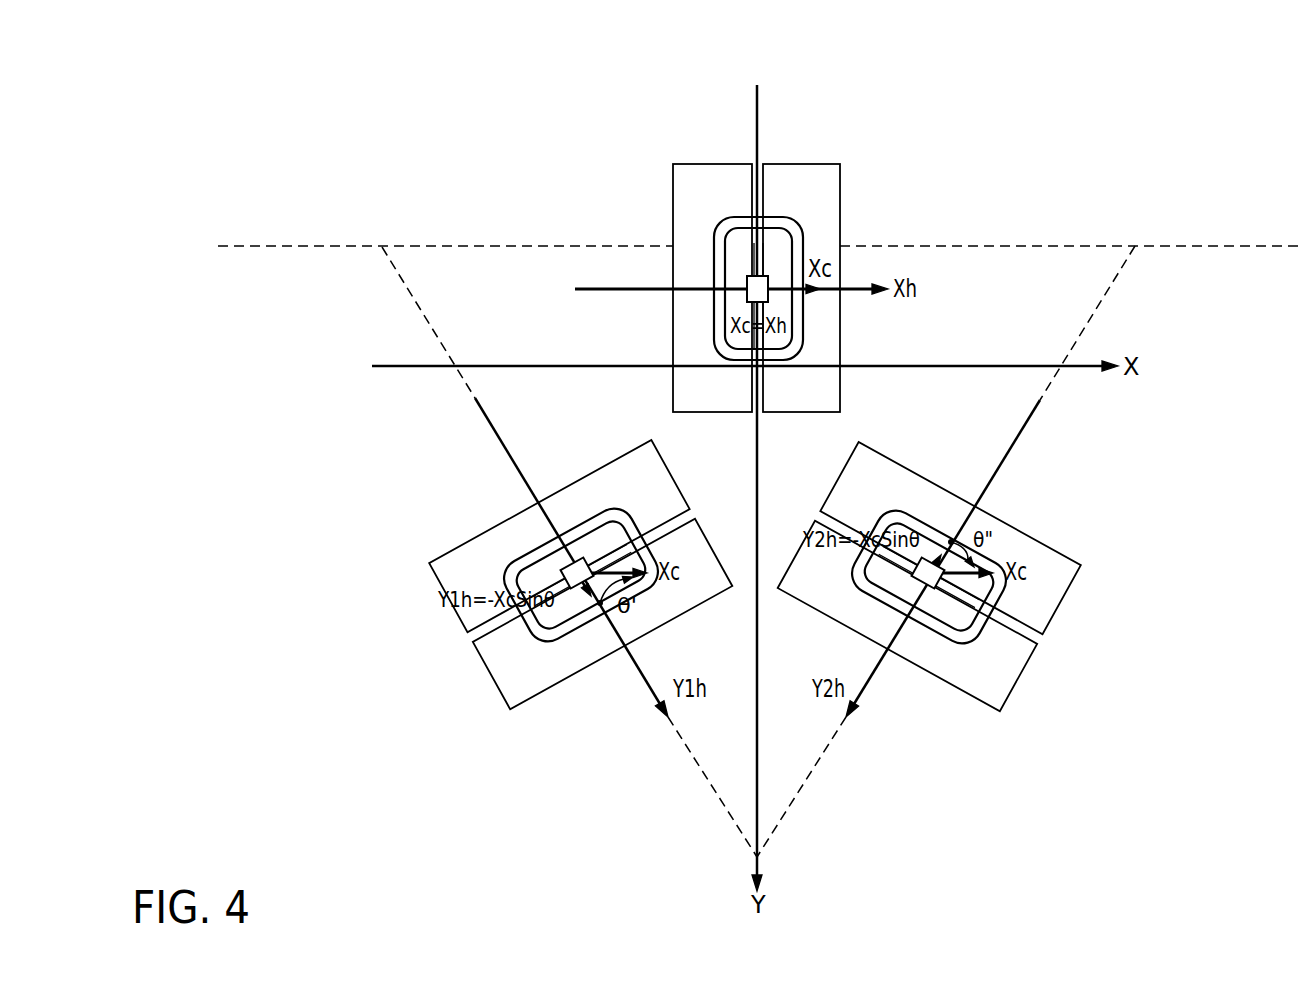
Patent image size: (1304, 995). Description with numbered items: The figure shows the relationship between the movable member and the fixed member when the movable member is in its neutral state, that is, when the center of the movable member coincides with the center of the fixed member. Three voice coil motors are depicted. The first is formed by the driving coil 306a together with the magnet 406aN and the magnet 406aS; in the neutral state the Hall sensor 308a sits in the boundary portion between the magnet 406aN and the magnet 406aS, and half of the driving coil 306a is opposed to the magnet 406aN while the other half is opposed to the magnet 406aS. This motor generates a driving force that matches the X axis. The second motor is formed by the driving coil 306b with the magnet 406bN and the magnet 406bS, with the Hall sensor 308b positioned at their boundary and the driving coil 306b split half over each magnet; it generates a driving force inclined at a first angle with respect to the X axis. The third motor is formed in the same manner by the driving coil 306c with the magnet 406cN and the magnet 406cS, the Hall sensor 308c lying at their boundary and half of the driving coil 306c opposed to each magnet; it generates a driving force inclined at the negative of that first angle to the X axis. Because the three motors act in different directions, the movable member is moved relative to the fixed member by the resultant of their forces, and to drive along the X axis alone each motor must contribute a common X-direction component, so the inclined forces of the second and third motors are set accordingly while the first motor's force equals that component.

The magnet 406aN is at (689, 164).
The magnet 406aS is at (806, 164).
The driving coil 306a is at (788, 228).
The Hall sensor 308a is at (770, 283).
The magnet 406bS is at (447, 577).
The magnet 406bN is at (505, 668).
The driving coil 306b is at (537, 557).
The Hall sensor 308b is at (573, 587).
The magnet 406cN is at (1060, 587).
The magnet 406cS is at (1010, 665).
The driving coil 306c is at (1005, 595).
The Hall sensor 308c is at (938, 585).